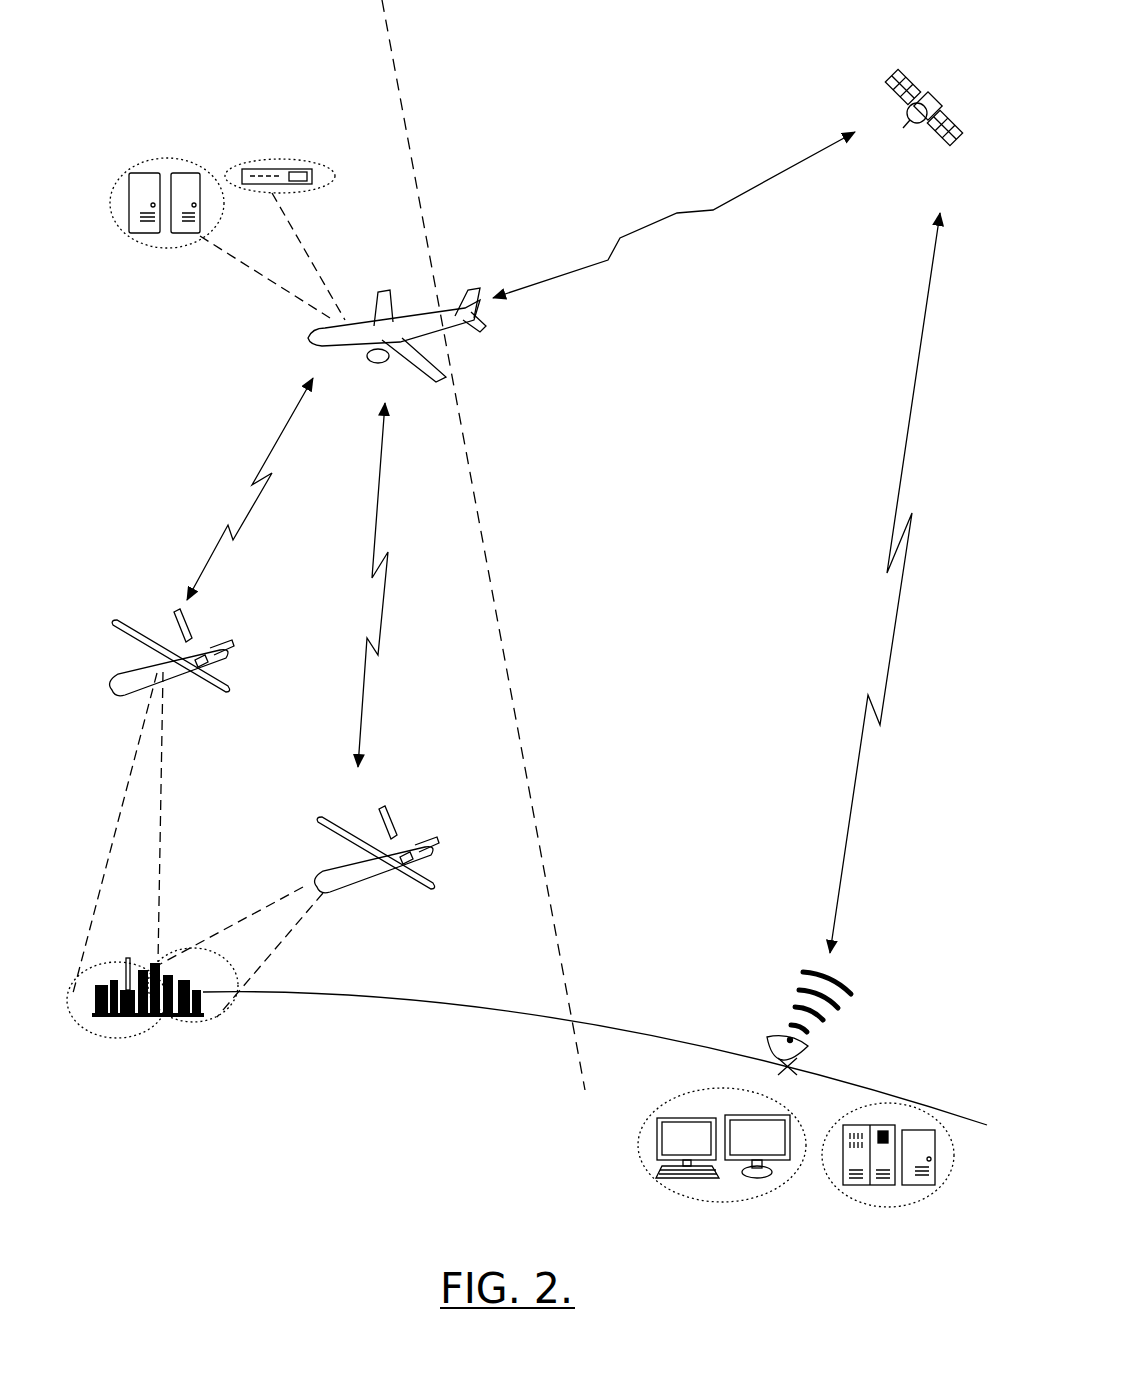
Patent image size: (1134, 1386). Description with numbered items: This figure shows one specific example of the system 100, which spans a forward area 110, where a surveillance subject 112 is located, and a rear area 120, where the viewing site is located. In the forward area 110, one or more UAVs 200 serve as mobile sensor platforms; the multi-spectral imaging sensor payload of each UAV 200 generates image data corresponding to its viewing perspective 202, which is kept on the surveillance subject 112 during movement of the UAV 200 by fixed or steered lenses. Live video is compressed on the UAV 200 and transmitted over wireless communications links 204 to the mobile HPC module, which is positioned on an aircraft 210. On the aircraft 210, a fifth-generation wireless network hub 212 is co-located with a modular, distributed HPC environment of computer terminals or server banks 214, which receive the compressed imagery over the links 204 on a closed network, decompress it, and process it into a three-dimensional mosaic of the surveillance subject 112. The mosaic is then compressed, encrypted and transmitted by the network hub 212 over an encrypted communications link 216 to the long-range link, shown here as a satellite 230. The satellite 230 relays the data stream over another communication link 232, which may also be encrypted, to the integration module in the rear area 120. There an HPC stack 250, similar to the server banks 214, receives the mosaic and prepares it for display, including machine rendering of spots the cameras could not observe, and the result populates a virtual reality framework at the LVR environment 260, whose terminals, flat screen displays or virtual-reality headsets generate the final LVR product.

The system 100 is at (310, 1212).
The forward area 110 is at (285, 62).
The rear area 120 is at (492, 42).
The surveillance subject 112 is at (143, 1016).
The UAV 200 is at (166, 652).
The viewing perspective 202 is at (192, 947).
The wireless communications link 204 is at (252, 508).
The aircraft 210 is at (412, 318).
The 5G network hub 212 is at (285, 157).
The computer terminals or server banks 214 is at (175, 158).
The encrypted communications link 216 is at (707, 200).
The satellite 230 is at (897, 78).
The communication link 232 is at (895, 506).
The HPC stack 250 is at (870, 1207).
The LVR environment 260 is at (715, 1197).